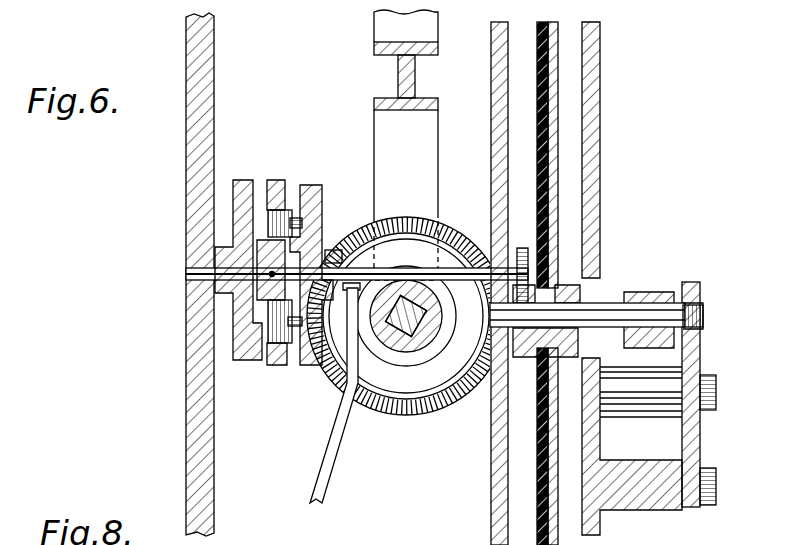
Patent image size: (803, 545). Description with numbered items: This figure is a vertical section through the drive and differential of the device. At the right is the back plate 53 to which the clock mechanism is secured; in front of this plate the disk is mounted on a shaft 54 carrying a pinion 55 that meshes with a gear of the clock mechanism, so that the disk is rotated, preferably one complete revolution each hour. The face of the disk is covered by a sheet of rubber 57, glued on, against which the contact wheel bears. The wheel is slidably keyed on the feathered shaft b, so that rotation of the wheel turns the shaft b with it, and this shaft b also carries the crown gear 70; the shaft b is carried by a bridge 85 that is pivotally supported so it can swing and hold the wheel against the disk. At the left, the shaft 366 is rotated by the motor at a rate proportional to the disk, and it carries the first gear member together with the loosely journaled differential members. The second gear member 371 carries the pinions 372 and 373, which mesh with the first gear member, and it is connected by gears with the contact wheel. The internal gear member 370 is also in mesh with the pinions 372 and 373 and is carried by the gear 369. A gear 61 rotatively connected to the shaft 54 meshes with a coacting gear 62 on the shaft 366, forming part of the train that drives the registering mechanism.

The back plate 53 is at (598, 165).
The shaft 54 is at (610, 306).
The pinion 55 is at (653, 300).
The sheet of rubber 57 is at (546, 24).
The gear 61 is at (528, 354).
The coacting gear 62 is at (522, 248).
The crown gear 70 is at (448, 399).
The bridge 85 is at (396, 53).
The shaft b is at (409, 300).
The shaft 366 is at (358, 272).
The gear 369 is at (250, 361).
The internal gear member 370 is at (278, 180).
The second gear member 371 is at (318, 366).
The pinion 372 is at (289, 211).
The pinion 373 is at (290, 344).